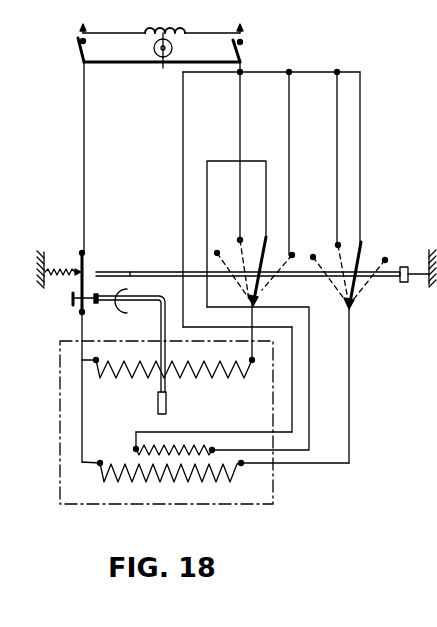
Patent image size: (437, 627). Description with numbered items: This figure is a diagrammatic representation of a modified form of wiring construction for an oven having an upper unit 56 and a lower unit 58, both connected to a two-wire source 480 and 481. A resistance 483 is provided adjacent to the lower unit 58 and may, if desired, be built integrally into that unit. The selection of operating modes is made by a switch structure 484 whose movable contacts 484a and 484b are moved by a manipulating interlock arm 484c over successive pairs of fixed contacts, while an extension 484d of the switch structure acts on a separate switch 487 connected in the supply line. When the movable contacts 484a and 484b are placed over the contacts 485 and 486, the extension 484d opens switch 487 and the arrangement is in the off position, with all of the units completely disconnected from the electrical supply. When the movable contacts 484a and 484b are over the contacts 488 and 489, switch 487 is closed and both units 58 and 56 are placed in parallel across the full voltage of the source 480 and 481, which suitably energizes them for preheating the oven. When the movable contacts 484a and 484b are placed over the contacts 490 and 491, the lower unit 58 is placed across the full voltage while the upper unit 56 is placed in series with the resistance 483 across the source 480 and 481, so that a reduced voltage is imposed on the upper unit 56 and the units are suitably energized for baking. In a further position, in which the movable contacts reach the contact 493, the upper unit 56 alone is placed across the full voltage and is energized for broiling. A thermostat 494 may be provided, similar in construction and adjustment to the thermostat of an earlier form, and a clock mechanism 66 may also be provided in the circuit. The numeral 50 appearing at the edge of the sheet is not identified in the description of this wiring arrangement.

The two-wire source line 480 is at (80, 33).
The two-wire source line 481 is at (243, 32).
The clock mechanism 66 is at (173, 48).
The sheet numeral 50 is at (428, 18).
The switch 487 is at (84, 256).
The extension 484d is at (109, 275).
The switch structure 484 is at (236, 305).
The movable contact 484a is at (265, 286).
The movable contact 484b is at (355, 288).
The manipulating interlock arm 484c is at (380, 286).
The contact 485 is at (217, 253).
The contact 488 is at (258, 244).
The contact 490 is at (265, 238).
The contact 489 is at (338, 245).
The contact 486 is at (313, 257).
The contact 491 is at (361, 242).
The contact 493 is at (386, 260).
The thermostat 494 is at (116, 309).
The upper unit 56 is at (207, 384).
The resistance 483 is at (166, 447).
The lower unit 58 is at (226, 483).